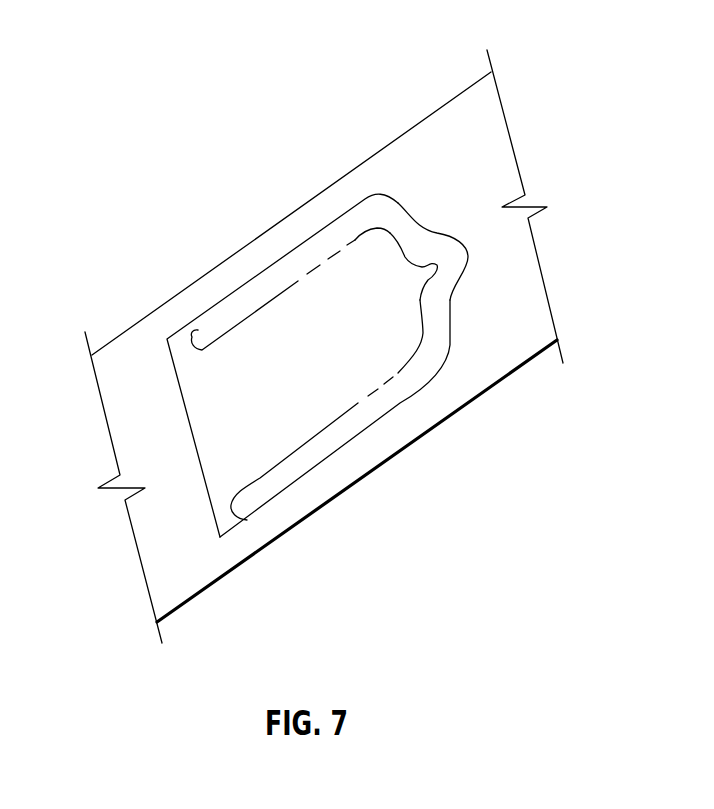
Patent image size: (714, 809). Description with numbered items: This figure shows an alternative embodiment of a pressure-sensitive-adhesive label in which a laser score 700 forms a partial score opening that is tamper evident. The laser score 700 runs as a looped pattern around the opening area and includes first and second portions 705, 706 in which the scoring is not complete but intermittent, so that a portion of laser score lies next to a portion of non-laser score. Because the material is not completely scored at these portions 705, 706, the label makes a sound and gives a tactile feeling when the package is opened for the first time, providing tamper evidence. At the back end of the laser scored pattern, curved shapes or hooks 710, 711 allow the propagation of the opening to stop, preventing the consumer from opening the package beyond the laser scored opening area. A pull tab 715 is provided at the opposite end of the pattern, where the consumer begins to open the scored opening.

The laser score 700 is at (233, 322).
The first portion 705 is at (328, 258).
The second portion 706 is at (360, 400).
The hook 710 is at (175, 338).
The hook 711 is at (230, 507).
The pull tab 715 is at (452, 250).